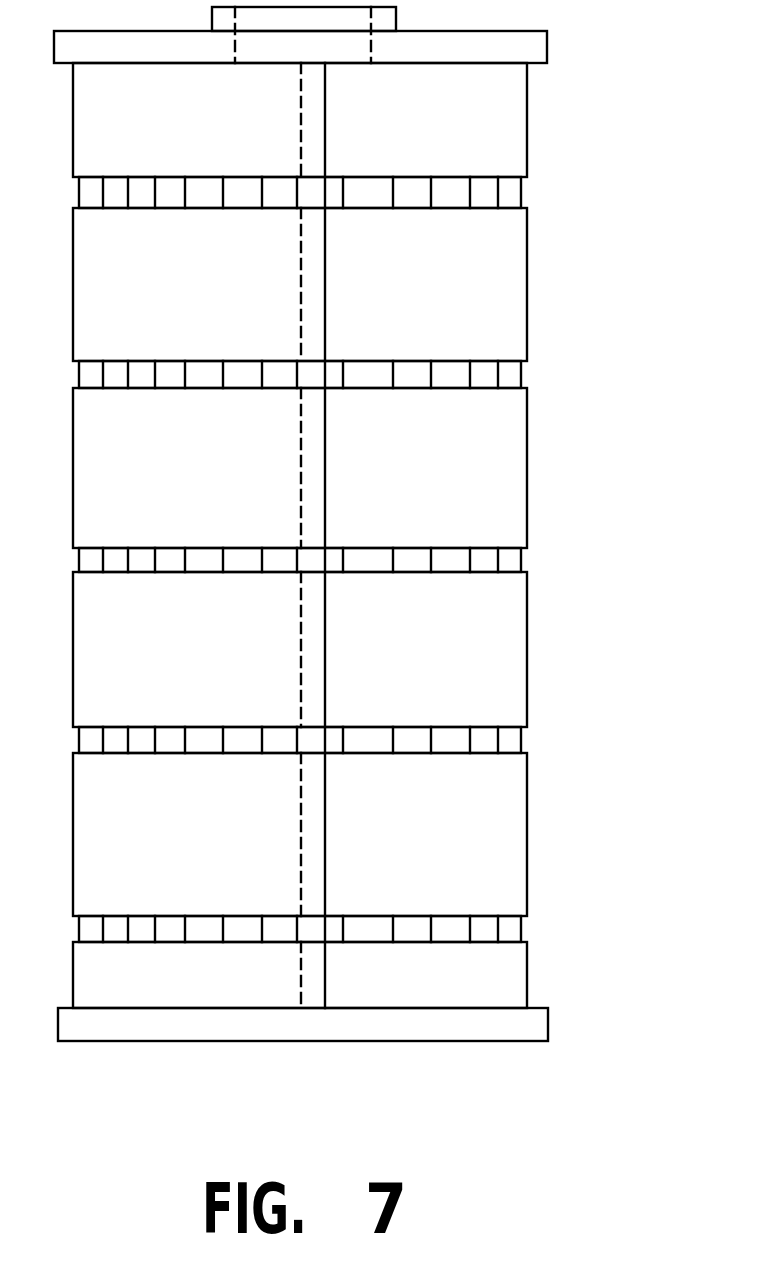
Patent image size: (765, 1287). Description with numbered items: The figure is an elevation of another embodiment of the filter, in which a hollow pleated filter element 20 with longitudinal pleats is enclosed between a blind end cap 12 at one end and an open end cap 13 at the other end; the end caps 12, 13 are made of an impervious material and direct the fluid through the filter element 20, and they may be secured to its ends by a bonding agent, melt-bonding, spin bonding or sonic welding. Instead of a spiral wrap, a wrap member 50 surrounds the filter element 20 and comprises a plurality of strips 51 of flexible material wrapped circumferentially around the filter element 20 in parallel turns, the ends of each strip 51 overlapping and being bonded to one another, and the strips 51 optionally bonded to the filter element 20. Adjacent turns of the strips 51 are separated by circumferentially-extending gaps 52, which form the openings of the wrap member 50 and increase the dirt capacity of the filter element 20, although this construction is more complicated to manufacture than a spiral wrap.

The blind end cap 12 is at (549, 1027).
The open end cap 13 is at (540, 50).
The filter element 20 is at (521, 556).
The wrap member 50 is at (372, 535).
The strips 51 is at (512, 143).
The circumferentially-extending gaps 52 is at (521, 192).